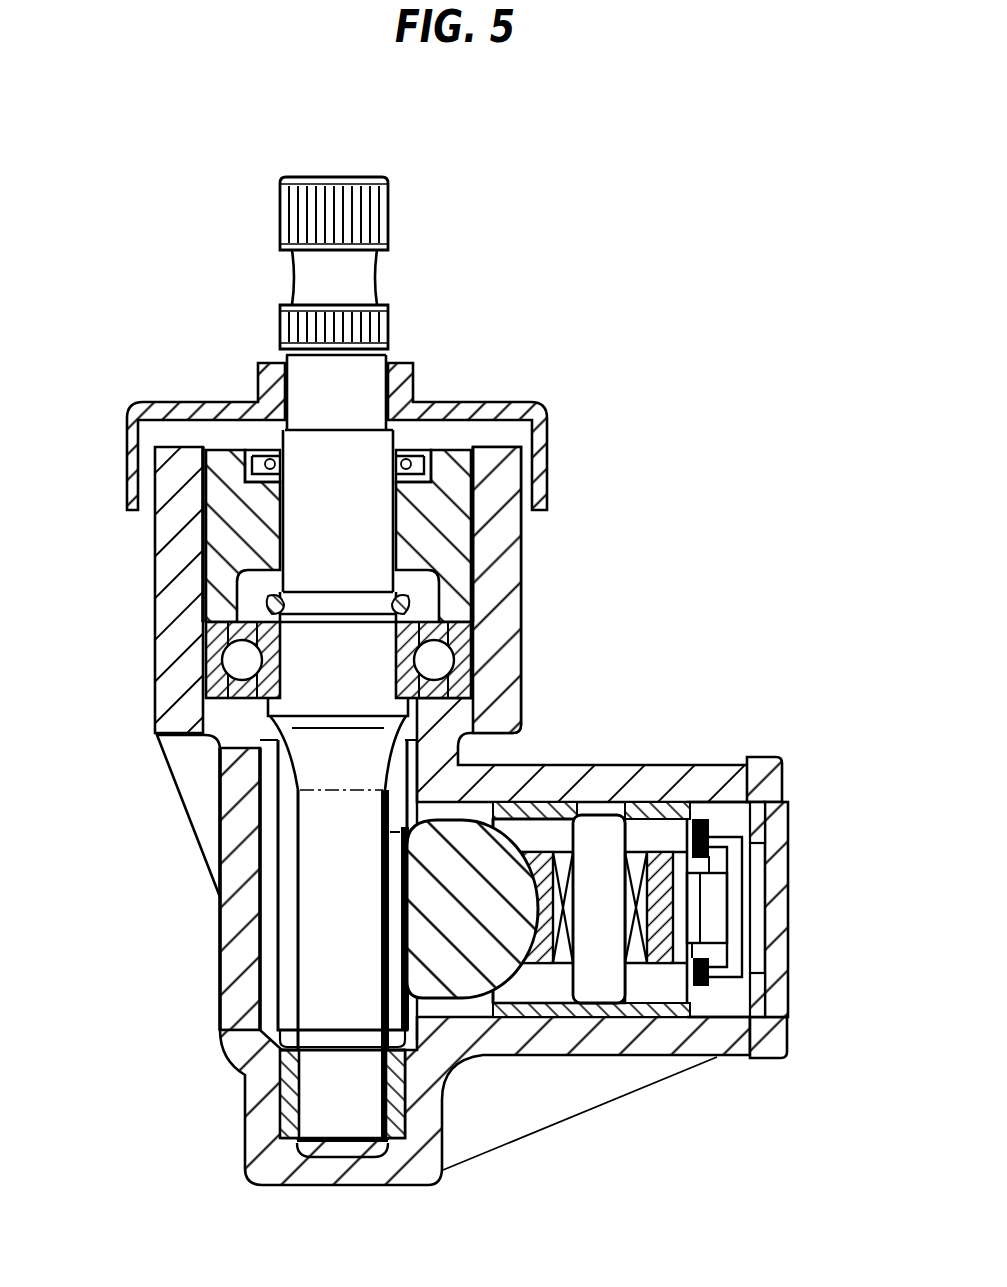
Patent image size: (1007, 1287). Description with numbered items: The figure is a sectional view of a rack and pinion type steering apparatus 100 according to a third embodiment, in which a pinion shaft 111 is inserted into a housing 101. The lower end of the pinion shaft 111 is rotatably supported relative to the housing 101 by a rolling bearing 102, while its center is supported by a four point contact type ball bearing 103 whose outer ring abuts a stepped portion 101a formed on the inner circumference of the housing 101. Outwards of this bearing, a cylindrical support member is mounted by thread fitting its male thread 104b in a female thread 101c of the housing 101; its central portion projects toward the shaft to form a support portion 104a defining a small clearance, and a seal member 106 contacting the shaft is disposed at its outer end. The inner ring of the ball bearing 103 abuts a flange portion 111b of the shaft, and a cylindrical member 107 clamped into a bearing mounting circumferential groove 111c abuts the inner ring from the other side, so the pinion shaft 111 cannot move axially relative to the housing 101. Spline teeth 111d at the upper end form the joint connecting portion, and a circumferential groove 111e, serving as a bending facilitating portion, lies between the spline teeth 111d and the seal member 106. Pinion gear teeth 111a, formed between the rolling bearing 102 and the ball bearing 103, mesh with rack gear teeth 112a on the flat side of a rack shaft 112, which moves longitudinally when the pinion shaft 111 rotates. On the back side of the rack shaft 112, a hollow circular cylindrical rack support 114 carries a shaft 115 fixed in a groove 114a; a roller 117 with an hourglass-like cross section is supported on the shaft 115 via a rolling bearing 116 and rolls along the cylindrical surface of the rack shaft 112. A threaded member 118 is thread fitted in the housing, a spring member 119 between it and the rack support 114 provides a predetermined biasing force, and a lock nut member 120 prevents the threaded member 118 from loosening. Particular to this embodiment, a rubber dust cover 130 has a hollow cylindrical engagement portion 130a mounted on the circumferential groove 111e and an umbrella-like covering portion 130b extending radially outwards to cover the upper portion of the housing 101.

The steering apparatus 100 is at (583, 372).
The housing 101 is at (503, 633).
The stepped portion 101a is at (713, 763).
The female thread 101c is at (205, 502).
The rolling bearing 102 is at (290, 1100).
The four point contact type ball bearing 103 is at (246, 665).
The support portion 104a is at (240, 540).
The male thread 104b is at (205, 548).
The seal member 106 is at (468, 410).
The cylindrical member 107 is at (266, 604).
The pinion shaft 111 is at (313, 178).
The pinion gear teeth 111a is at (290, 917).
The flange portion 111b is at (292, 707).
The bearing mounting circumferential groove 111c is at (357, 598).
The spline teeth 111d is at (365, 212).
The circumferential groove 111e is at (352, 382).
The rack shaft 112 is at (460, 983).
The rack gear teeth 112a is at (400, 960).
The rack support 114 is at (695, 800).
The groove 114a is at (615, 785).
The shaft 115 is at (588, 985).
The rolling bearing 116 is at (652, 1008).
The roller 117 is at (720, 940).
The threaded member 118 is at (712, 820).
The spring member 119 is at (712, 842).
The lock nut member 120 is at (785, 763).
The dust cover 130 is at (141, 410).
The engagement portion 130a is at (402, 425).
The covering portion 130b is at (548, 470).